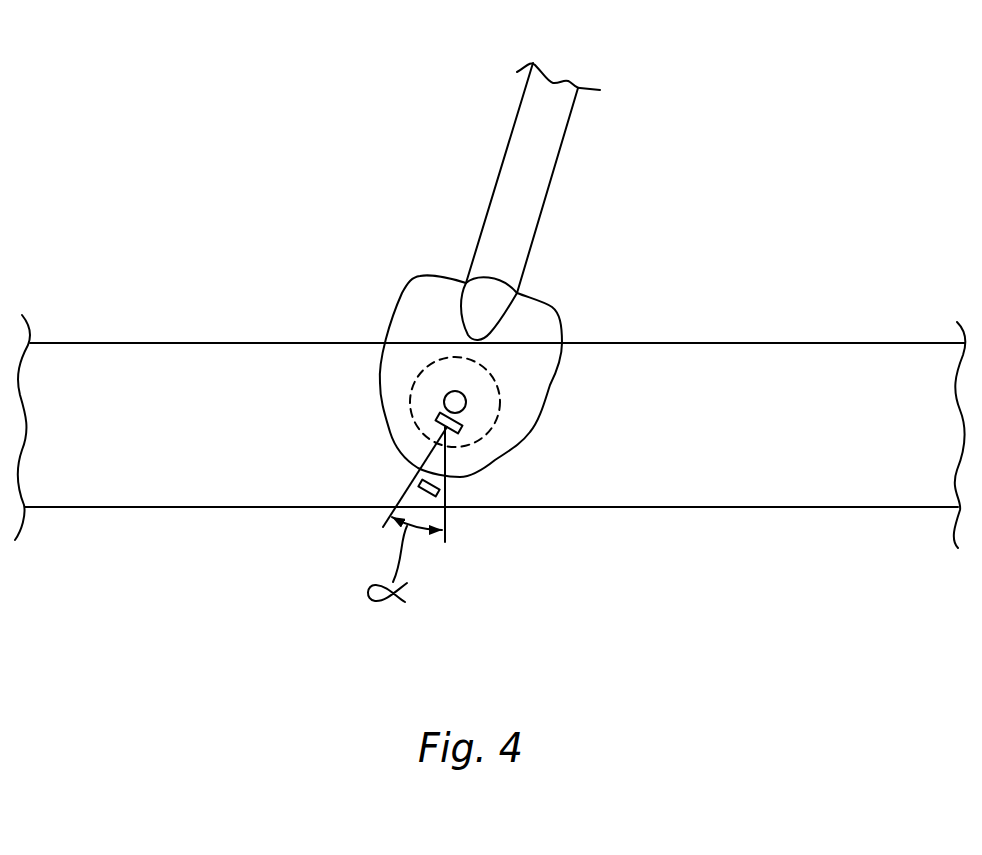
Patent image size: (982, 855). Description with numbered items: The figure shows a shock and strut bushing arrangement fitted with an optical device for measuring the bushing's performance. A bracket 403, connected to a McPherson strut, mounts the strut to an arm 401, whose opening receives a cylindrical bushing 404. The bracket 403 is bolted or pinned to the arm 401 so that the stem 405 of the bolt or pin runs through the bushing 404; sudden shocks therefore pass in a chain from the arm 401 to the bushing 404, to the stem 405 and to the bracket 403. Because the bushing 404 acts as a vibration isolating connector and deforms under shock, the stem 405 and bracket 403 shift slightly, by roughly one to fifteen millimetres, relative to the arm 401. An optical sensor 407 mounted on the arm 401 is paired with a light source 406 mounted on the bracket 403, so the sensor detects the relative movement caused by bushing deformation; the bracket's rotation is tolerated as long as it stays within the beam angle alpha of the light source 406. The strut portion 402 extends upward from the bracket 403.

The arm 401 is at (113, 509).
The rod / probe 402 is at (557, 170).
The bracket 403 is at (552, 305).
The cylindrical bushing 404 is at (437, 362).
The stem 405 is at (472, 395).
The light source 406 is at (442, 418).
The optical sensor 407 is at (440, 492).